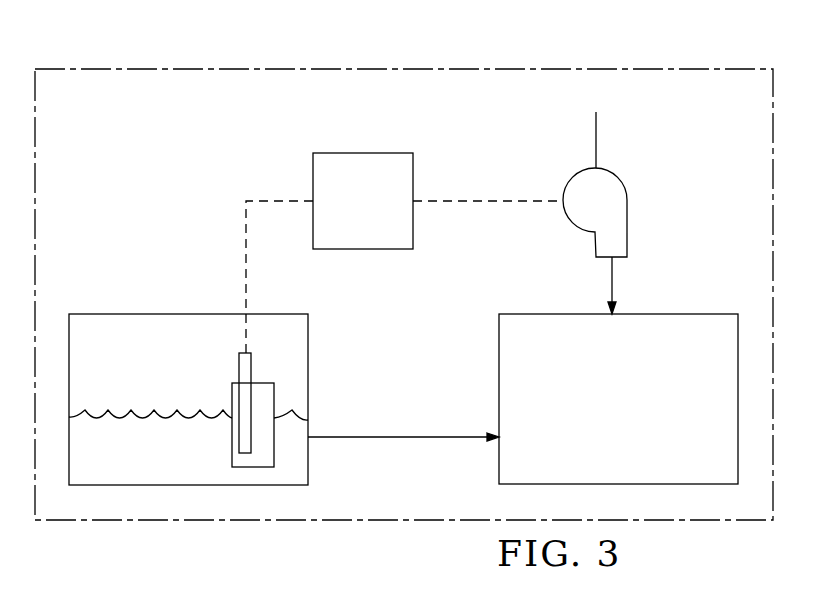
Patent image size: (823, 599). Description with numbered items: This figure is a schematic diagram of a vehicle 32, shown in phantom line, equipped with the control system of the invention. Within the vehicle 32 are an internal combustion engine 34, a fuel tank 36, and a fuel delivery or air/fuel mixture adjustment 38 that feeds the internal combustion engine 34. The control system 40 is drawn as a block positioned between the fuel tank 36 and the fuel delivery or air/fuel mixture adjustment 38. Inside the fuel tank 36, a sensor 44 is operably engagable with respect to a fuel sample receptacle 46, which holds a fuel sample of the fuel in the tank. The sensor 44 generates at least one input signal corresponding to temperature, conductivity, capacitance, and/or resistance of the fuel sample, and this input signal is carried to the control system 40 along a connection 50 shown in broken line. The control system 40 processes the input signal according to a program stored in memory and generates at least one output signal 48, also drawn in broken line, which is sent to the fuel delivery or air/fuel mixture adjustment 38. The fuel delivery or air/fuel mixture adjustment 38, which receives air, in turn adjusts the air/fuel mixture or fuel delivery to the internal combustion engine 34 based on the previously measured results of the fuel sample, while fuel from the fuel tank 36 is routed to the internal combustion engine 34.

The vehicle 32 is at (645, 69).
The internal combustion engine 34 is at (651, 313).
The fuel tank 36 is at (152, 314).
The fuel delivery or air/fuel mixture adjustment 38 is at (617, 177).
The control system 40 is at (333, 153).
The sensor 44 is at (251, 353).
The fuel sample receptacle 46 is at (274, 450).
The output signal 48 is at (545, 199).
The sensor line 50 is at (268, 199).